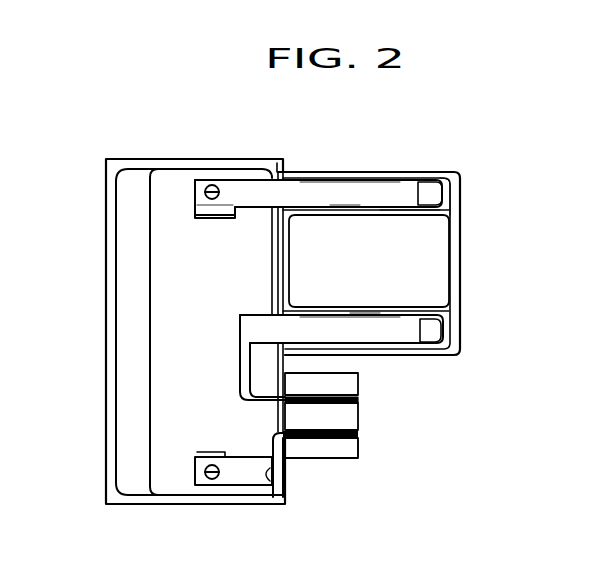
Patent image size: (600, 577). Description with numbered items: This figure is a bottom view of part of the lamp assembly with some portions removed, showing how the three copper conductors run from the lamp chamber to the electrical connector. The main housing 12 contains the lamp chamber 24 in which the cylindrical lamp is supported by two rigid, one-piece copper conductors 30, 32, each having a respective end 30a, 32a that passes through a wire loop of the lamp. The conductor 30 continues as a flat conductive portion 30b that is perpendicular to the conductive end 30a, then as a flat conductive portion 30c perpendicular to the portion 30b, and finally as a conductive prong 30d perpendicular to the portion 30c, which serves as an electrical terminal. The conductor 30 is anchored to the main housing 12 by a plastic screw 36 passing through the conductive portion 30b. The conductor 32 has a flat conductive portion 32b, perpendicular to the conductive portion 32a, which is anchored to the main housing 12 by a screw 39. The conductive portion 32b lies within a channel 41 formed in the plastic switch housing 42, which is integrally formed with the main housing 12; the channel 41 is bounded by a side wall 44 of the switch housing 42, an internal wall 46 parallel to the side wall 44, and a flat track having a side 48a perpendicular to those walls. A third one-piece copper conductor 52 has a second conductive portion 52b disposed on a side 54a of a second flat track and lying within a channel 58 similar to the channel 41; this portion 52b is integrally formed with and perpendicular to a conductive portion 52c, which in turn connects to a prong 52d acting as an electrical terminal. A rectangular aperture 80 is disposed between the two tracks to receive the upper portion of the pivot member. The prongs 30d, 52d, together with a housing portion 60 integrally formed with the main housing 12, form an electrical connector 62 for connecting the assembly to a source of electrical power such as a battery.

The main housing 12 is at (106, 440).
The lamp chamber 24 is at (177, 381).
The conductor 30 is at (308, 478).
The conductive end 30a is at (207, 452).
The flat conductive portion 30b is at (249, 480).
The flat conductive portion 30c is at (278, 487).
The conductive prong 30d is at (360, 437).
The conductor 32 is at (329, 198).
The conductive portion 32a is at (207, 221).
The flat conductive portion 32b is at (312, 186).
The plastic screw 36 is at (207, 481).
The screw 39 is at (215, 189).
The channel 41 is at (340, 190).
The switch housing 42 is at (460, 250).
The side wall 44 is at (390, 172).
The internal wall 46 is at (411, 214).
The side of flat track 48a is at (430, 189).
The third conductor 52 is at (360, 341).
The second conductive portion 52b is at (385, 341).
The conductive portion 52c is at (243, 372).
The prong 52d is at (360, 405).
The side of track 54a is at (432, 330).
The channel 58 is at (366, 315).
The housing portion 60 is at (343, 459).
The electrical connector 62 is at (362, 445).
The rectangular aperture 80 is at (452, 215).